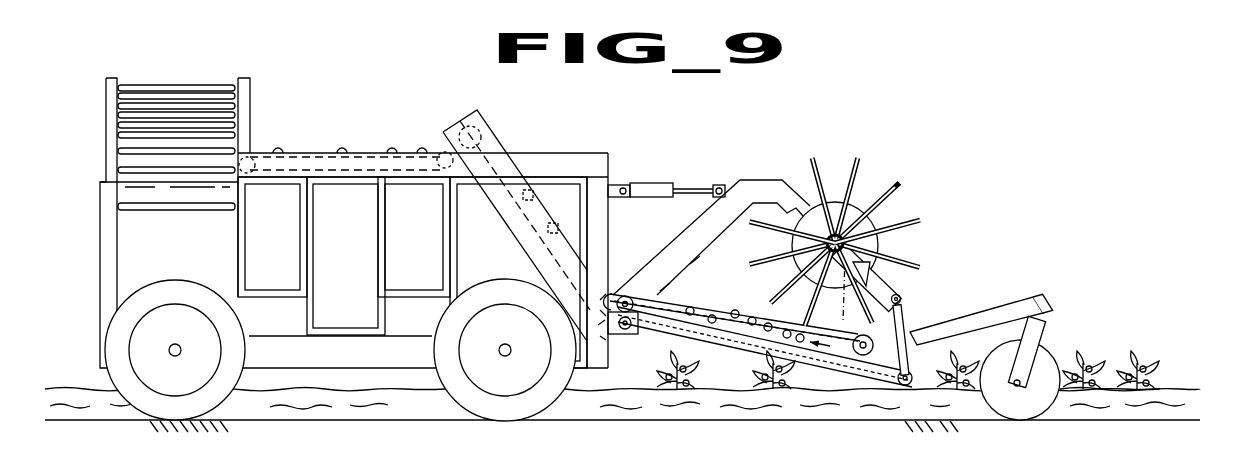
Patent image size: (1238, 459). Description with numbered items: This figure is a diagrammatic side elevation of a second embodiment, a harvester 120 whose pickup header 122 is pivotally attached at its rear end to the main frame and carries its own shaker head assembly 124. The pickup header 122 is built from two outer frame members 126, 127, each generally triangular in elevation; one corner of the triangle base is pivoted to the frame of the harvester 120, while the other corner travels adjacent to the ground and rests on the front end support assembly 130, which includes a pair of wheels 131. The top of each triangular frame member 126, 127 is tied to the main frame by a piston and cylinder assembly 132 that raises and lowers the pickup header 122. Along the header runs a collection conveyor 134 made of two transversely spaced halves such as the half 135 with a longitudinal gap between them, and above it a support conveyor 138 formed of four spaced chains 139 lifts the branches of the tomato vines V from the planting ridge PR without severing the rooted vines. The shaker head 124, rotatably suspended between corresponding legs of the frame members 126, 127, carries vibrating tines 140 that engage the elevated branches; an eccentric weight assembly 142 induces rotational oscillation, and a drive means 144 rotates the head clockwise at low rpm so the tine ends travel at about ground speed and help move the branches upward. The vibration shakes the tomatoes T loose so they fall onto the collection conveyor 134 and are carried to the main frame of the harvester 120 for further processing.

The second harvester 120 is at (645, 128).
The pickup header 122 is at (898, 284).
The shaker head assembly 124 is at (866, 152).
The outer frame member 126 is at (754, 180).
The outer frame member 127 is at (650, 270).
The front end support assembly 130 is at (1052, 307).
The wheels 131 is at (1040, 403).
The piston and cylinder assembly 132 is at (648, 183).
The collection conveyor 134 is at (838, 375).
The collection conveyor half 135 is at (683, 331).
The support conveyor 138 is at (912, 300).
The chains 139 is at (788, 312).
The vibrating tines 140 is at (770, 260).
The eccentric weight assembly 142 is at (933, 198).
The drive means 144 is at (862, 272).
The tomatoes T is at (718, 320).
The tomato vines V is at (755, 370).
The planting ridge PR is at (1190, 375).